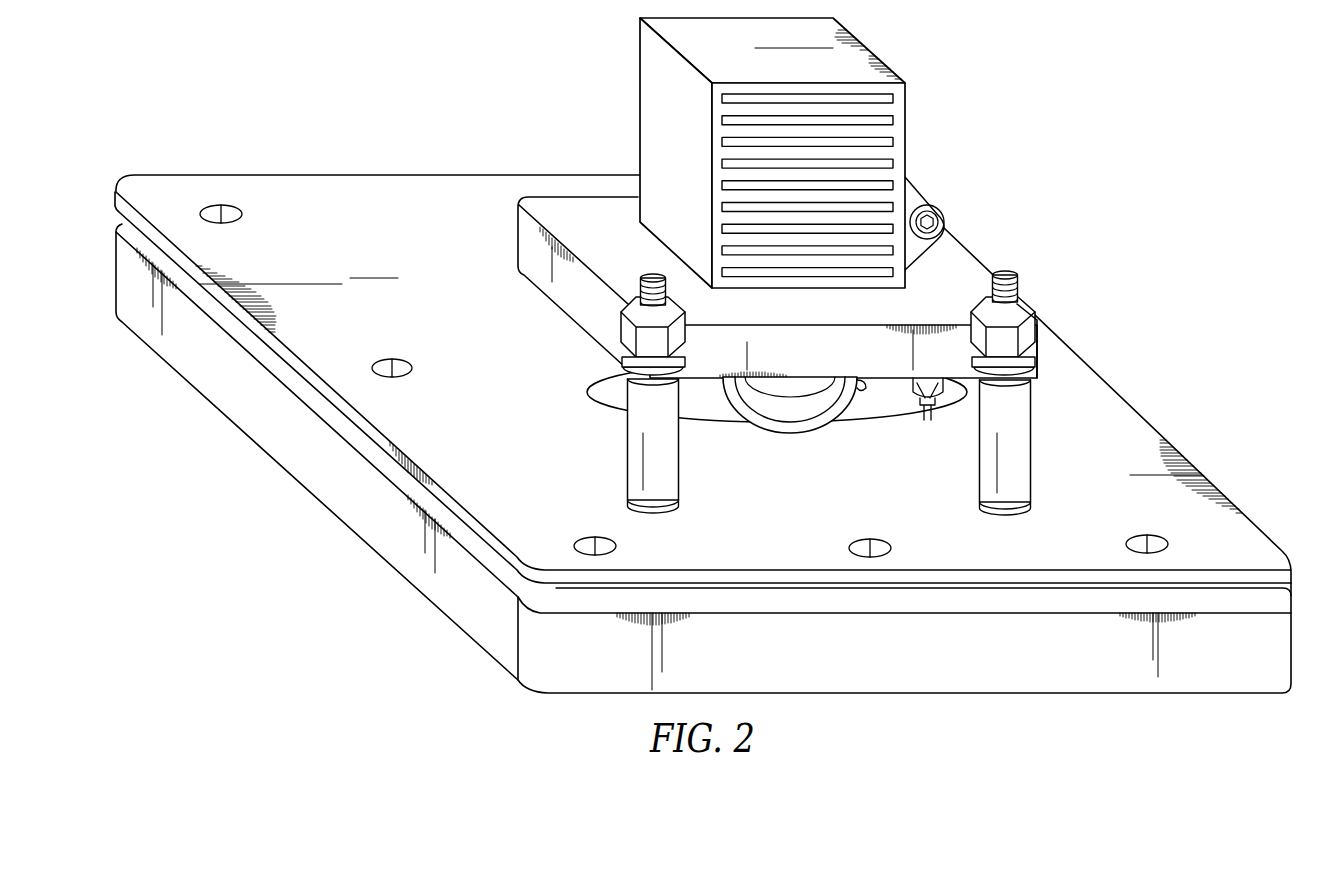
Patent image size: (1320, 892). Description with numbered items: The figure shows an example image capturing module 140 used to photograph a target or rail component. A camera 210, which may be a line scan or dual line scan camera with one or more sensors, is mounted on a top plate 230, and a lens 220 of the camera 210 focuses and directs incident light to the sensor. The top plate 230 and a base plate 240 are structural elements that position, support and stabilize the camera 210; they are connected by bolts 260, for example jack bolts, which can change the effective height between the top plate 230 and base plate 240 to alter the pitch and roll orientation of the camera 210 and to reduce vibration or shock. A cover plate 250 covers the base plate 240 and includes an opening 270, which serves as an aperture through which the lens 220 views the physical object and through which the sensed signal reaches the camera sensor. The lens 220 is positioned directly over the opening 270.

The image capturing module 140 is at (1031, 167).
The camera 210 is at (656, 89).
The lens 220 is at (810, 428).
The top plate 230 is at (571, 298).
The base plate 240 is at (1025, 675).
The cover plate 250 is at (1117, 421).
The bolts 260 is at (647, 276).
The opening 270 is at (605, 380).